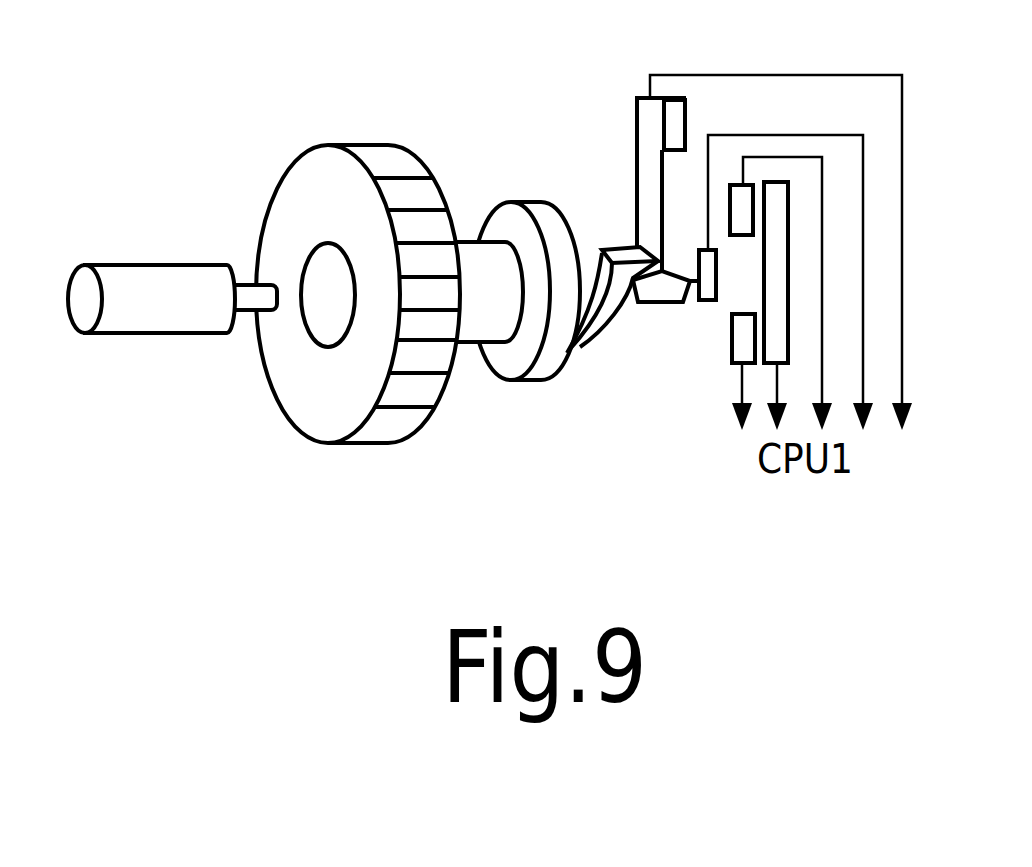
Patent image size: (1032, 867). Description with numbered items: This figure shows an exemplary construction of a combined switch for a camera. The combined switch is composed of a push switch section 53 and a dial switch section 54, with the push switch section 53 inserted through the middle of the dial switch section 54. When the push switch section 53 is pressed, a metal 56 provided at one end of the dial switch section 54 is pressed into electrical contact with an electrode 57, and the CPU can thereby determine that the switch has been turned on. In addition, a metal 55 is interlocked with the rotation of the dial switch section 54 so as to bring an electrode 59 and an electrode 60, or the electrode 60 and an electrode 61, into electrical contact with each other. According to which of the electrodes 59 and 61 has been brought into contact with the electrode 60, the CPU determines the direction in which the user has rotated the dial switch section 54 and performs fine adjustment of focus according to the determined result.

The push switch section 53 is at (152, 263).
The dial switch section 54 is at (350, 443).
The metal 55 is at (605, 343).
The metal 56 is at (645, 108).
The electrode 57 is at (702, 306).
The electrode 59 is at (735, 368).
The electrode 60 is at (778, 182).
The electrode 61 is at (732, 182).